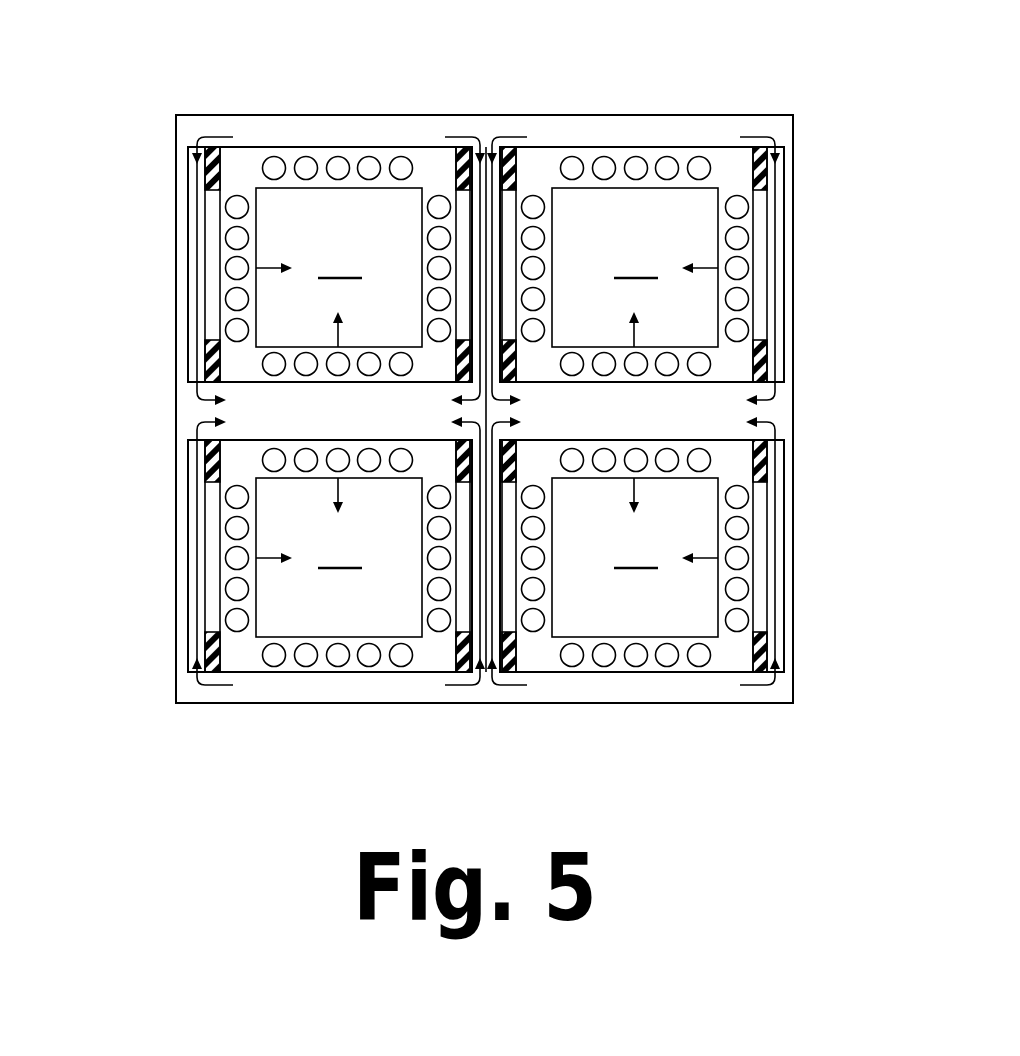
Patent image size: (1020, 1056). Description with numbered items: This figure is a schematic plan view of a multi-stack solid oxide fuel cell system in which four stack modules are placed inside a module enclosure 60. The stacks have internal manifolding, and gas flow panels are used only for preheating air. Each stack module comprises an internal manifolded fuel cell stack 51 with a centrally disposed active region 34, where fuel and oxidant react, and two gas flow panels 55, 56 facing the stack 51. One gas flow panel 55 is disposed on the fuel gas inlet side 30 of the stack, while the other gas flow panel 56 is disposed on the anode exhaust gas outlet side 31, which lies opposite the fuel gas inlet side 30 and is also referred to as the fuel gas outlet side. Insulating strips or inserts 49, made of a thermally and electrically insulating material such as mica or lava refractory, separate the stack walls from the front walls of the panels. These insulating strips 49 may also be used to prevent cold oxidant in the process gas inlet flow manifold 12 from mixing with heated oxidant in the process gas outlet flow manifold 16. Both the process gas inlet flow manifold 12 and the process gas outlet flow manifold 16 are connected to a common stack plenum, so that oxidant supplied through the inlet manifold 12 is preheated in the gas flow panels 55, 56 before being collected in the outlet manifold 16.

The process gas inlet flow manifold 12 is at (366, 127).
The process gas outlet flow manifold 16 is at (745, 413).
The fuel gas inlet side 30 is at (768, 498).
The anode exhaust gas outlet side 31 is at (457, 578).
The active region 34 is at (487, 412).
The insulating strips 49 is at (205, 472).
The internal manifolded fuel cell stack 51 is at (287, 143).
The gas flow panel 55 is at (188, 263).
The gas flow panel 56 is at (463, 207).
The module enclosure 60 is at (797, 150).